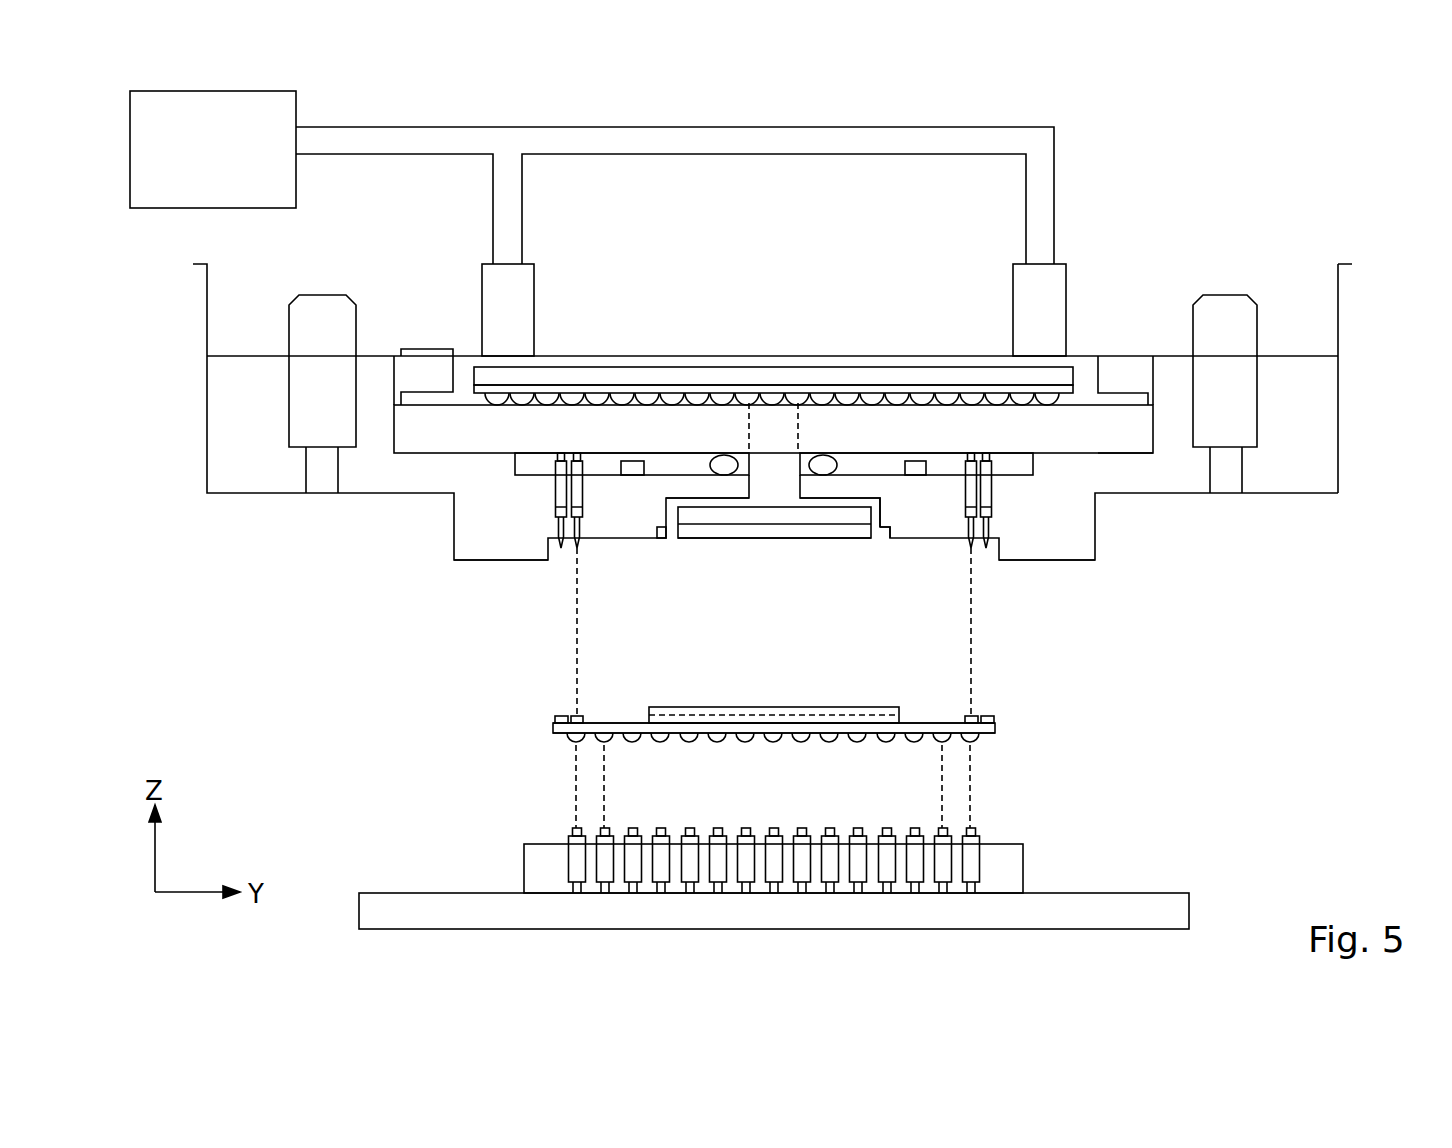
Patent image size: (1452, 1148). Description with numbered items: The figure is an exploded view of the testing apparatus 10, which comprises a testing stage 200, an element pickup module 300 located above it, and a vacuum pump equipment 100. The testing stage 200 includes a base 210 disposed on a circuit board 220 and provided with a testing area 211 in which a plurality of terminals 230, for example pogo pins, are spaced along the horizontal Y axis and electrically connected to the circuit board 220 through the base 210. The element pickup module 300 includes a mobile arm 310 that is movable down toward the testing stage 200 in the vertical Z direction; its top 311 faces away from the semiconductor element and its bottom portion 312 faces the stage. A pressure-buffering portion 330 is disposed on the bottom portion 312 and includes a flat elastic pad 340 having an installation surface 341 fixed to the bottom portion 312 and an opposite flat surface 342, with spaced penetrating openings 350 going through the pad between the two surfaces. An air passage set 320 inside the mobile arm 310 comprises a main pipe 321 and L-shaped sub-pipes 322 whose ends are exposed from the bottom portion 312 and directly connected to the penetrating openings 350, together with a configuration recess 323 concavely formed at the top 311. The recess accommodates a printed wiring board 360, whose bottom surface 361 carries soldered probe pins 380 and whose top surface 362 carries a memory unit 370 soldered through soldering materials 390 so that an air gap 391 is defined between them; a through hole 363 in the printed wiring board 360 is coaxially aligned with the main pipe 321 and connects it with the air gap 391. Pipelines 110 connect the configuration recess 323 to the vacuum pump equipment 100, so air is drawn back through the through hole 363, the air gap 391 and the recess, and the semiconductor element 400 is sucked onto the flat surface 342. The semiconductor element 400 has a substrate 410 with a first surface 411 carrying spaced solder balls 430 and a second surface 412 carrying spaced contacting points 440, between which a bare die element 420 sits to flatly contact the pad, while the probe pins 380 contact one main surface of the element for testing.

The testing apparatus 10 is at (1402, 99).
The vacuum pump equipment 100 is at (173, 91).
The pipelines 110 is at (497, 210).
The testing stage 200 is at (1275, 820).
The base 210 is at (1020, 851).
The testing area 211 is at (710, 820).
The circuit board 220 is at (1183, 895).
The terminals 230 is at (975, 873).
The element pickup module 300 is at (1338, 445).
The mobile arm 310 is at (1338, 392).
The top 311 is at (1305, 356).
The bottom portion 312 is at (1085, 545).
The air passage set 320 is at (1342, 752).
The main pipe 321 is at (767, 487).
The sub-pipes 322 is at (665, 513).
The configuration recess 323 is at (1087, 385).
The pressure-buffering portion 330 is at (1122, 565).
The elastic pad 340 is at (1058, 600).
The installation surface 341 is at (848, 533).
The flat surface 342 is at (815, 522).
The penetrating openings 350 is at (875, 530).
The printed wiring board 360 is at (402, 422).
The bottom surface 361 is at (1113, 457).
The top surface 362 is at (1095, 395).
The through hole 363 is at (808, 432).
The memory unit 370 is at (510, 370).
The probe pins 380 is at (557, 490).
The soldering materials 390 is at (702, 398).
The air gap 391 is at (613, 393).
The semiconductor element 400 is at (953, 723).
The substrate 410 is at (995, 728).
The first surface 411 is at (970, 742).
The second surface 412 is at (917, 723).
The bare die element 420 is at (733, 707).
The solder balls 430 is at (942, 742).
The contacting points 440 is at (975, 716).